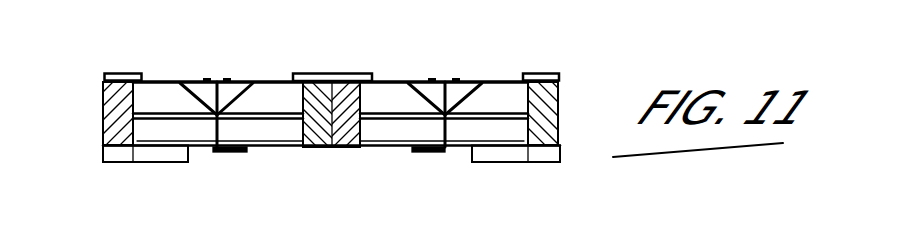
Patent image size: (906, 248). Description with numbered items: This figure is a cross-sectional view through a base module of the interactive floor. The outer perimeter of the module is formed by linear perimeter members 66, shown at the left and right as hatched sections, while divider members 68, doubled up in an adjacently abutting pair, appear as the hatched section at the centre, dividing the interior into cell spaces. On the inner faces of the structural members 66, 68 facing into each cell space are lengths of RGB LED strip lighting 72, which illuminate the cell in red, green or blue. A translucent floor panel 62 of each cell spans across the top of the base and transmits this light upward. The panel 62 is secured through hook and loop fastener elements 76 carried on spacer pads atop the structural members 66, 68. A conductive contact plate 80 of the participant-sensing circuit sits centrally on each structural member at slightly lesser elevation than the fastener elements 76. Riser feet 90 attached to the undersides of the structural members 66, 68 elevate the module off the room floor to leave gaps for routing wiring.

The floor panel 62 is at (93, 73).
The perimeter member 66 is at (117, 108).
The divider member 68 is at (331, 134).
The RGB LED strip lighting 72 is at (134, 116).
The hook and loop fastener element 76 is at (118, 72).
The conductive contact plate 80 is at (218, 80).
The riser foot 90 is at (157, 155).